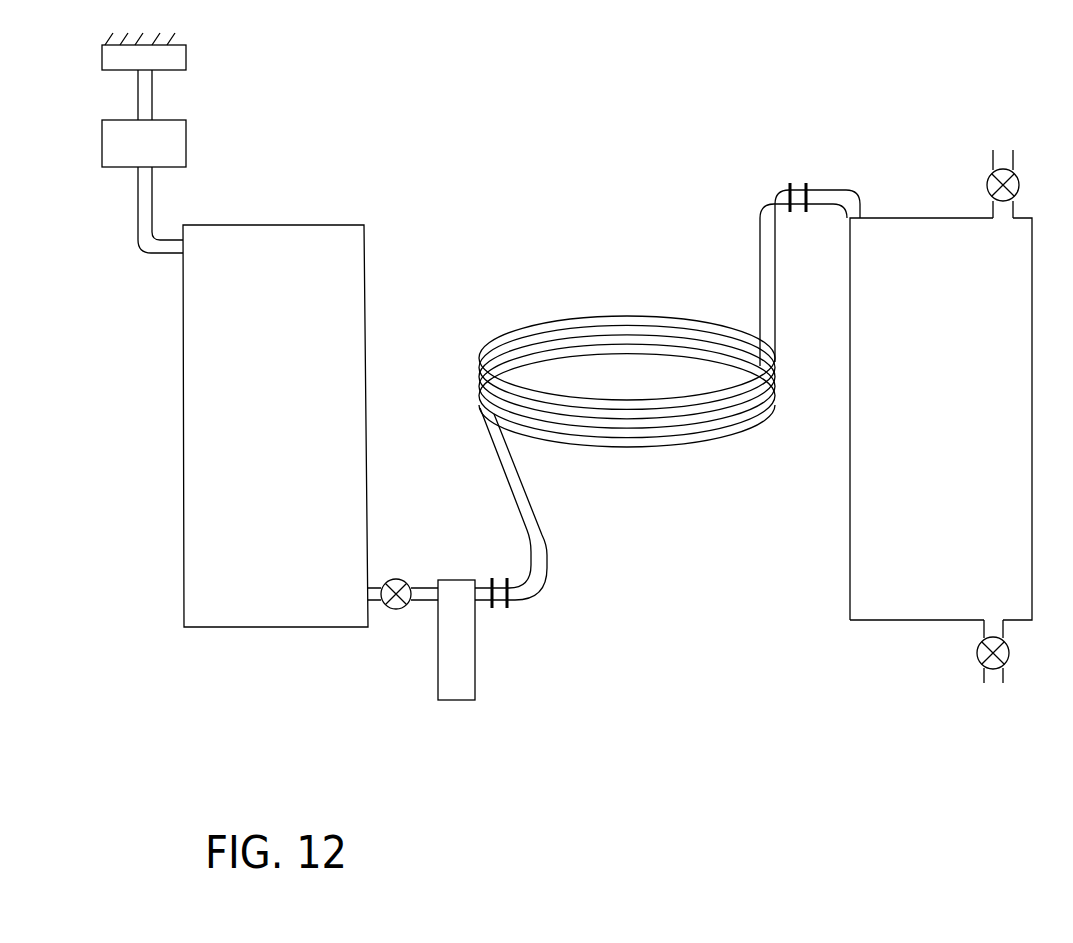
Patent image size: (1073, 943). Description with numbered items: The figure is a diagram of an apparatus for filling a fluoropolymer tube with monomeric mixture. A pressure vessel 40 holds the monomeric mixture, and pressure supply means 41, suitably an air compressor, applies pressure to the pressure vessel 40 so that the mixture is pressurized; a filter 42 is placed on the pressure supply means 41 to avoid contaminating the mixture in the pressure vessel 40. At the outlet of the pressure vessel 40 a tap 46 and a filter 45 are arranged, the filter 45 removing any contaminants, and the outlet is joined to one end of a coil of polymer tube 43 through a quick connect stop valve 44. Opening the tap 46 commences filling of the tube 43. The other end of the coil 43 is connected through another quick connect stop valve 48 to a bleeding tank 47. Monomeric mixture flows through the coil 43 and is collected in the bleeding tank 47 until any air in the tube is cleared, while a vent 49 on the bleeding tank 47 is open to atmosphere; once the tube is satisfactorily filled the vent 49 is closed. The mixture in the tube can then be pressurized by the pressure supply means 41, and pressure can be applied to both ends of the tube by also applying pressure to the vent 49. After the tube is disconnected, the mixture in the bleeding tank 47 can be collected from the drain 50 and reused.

The pressure vessel 40 is at (252, 429).
The pressure supply means 41 is at (131, 157).
The filter 42 is at (180, 58).
The coil of polymer tube 43 is at (627, 320).
The quick connect stop valve 44 is at (500, 610).
The filter 45 is at (462, 680).
The tap 46 is at (398, 586).
The bleeding tank 47 is at (919, 444).
The quick connect stop valve 48 is at (790, 182).
The vent 49 is at (988, 180).
The drain 50 is at (993, 668).